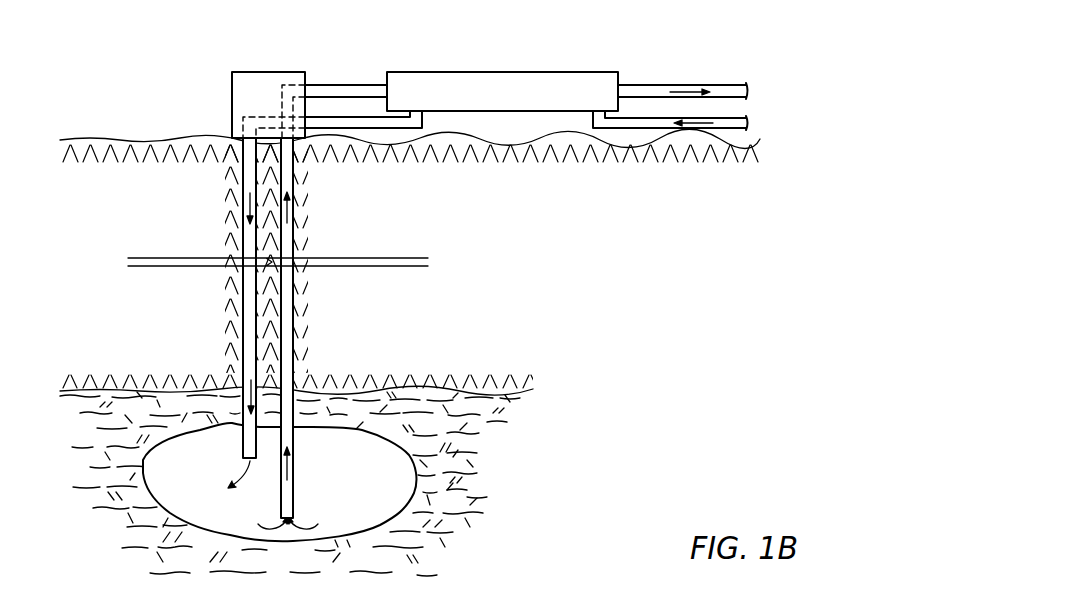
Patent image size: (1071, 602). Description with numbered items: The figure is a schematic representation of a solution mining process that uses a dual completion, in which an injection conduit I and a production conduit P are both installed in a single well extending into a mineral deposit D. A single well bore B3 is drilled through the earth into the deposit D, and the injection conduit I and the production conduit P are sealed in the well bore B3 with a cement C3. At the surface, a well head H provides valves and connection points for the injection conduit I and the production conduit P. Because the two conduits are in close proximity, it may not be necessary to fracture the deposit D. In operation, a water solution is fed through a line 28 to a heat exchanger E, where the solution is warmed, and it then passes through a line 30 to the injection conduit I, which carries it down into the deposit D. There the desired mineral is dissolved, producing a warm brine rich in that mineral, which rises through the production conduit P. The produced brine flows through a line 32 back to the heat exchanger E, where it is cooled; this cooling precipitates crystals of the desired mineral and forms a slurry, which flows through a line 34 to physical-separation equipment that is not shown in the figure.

The well head H is at (232, 90).
The line 32 is at (338, 84).
The heat exchanger E is at (507, 72).
The line 34 is at (708, 85).
The line 28 is at (740, 118).
The line 30 is at (424, 127).
The injection conduit I is at (242, 180).
The production conduit P is at (295, 186).
The cement C3 is at (240, 305).
The well bore B3 is at (311, 310).
The mineral deposit D is at (357, 492).